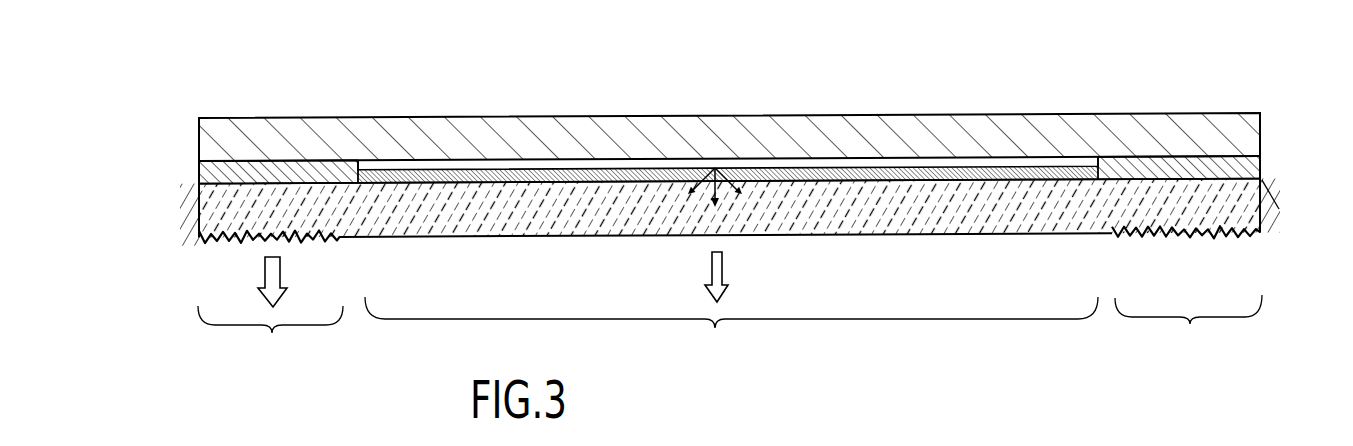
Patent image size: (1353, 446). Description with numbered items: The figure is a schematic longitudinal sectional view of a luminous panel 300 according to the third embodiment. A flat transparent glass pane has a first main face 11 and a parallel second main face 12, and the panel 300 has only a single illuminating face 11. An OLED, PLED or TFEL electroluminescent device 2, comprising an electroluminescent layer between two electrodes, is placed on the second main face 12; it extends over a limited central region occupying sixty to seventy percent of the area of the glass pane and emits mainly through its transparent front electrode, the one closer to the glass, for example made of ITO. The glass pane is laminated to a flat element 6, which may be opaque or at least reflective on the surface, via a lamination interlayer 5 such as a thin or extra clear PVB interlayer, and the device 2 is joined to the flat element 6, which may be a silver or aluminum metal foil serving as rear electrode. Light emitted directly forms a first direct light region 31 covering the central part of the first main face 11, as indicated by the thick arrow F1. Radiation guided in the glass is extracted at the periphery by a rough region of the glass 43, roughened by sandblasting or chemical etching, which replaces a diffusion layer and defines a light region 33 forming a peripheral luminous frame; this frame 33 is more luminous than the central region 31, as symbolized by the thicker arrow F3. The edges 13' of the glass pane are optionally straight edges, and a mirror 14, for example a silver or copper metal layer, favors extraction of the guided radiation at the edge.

The luminous panel 300 is at (262, 84).
The flat element 6 is at (490, 128).
The electroluminescent device 2 is at (853, 163).
The second main face 12 is at (1132, 177).
The lamination interlayer 5 is at (210, 173).
The edges of the glass pane 13' is at (756, 211).
The mirror 14 is at (1272, 193).
The first main face 11 is at (995, 232).
The rough region of the glass 43 is at (237, 252).
The light region forming a peripheral luminous frame 33 is at (730, 332).
The first direct light region 31 is at (731, 331).
The thicker arrow F3 is at (282, 279).
The thick arrow F1 is at (725, 277).